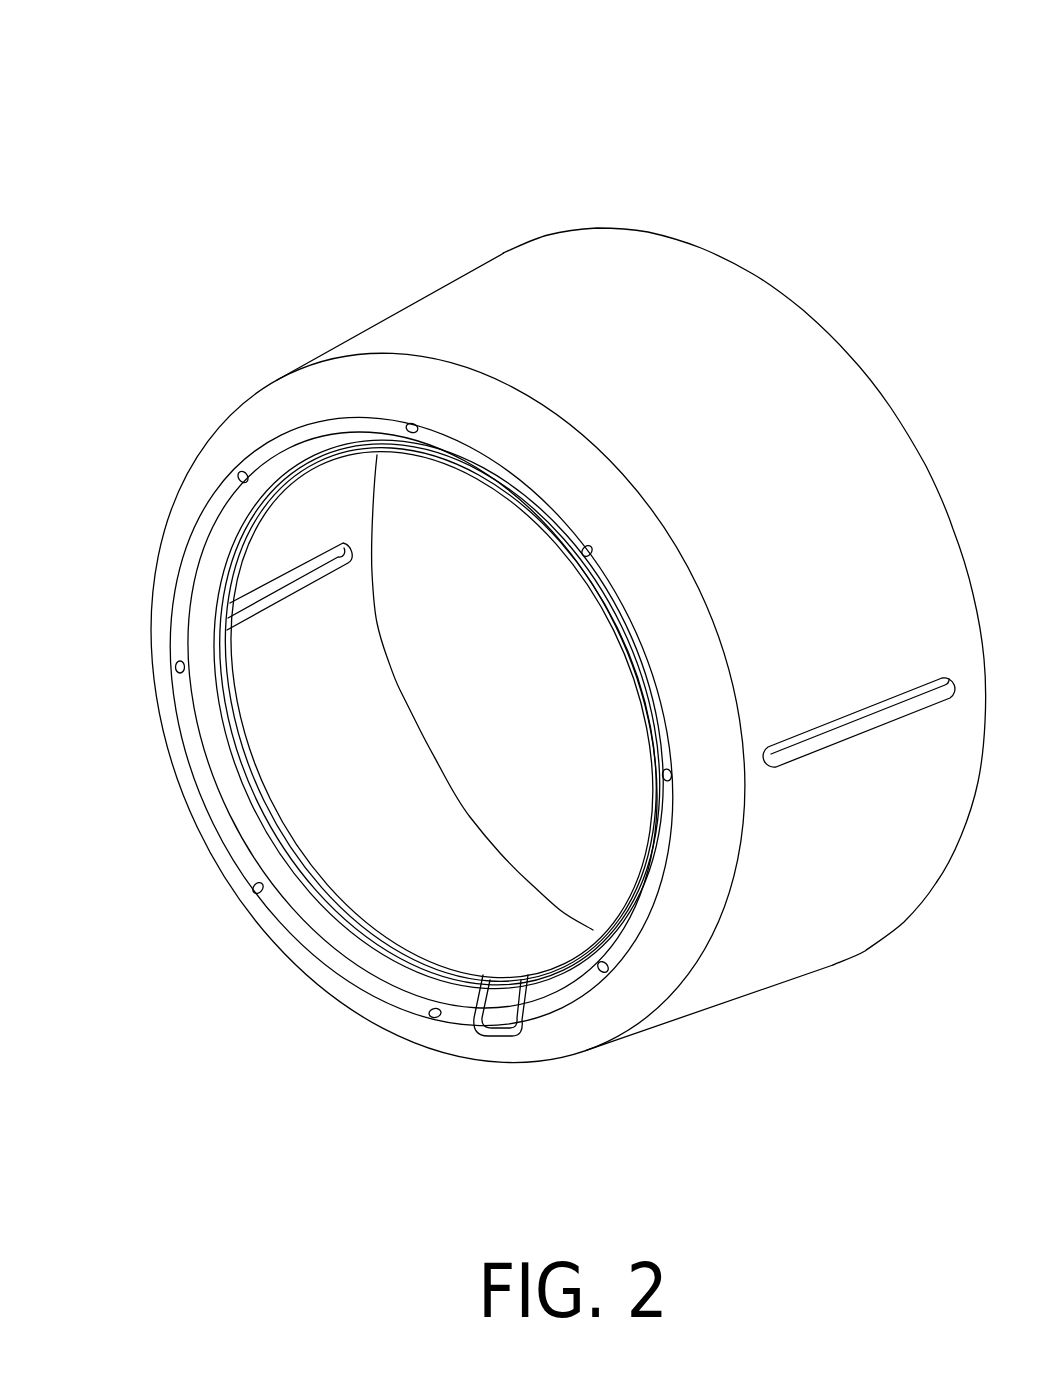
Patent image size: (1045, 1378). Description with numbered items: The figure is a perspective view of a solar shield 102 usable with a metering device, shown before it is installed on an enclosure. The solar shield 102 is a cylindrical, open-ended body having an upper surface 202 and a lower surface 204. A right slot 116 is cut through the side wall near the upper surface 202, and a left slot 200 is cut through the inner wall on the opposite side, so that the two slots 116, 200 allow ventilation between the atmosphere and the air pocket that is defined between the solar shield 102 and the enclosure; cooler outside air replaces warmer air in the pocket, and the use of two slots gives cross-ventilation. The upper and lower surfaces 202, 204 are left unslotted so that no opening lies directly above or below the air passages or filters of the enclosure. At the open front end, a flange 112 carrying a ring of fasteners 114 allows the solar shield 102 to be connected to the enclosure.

The solar shield 102 is at (852, 62).
The flange 112 is at (340, 390).
The fasteners 114 is at (241, 472).
The right slot 116 is at (846, 740).
The left slot 200 is at (284, 603).
The upper surface 202 is at (540, 303).
The lower surface 204 is at (735, 999).